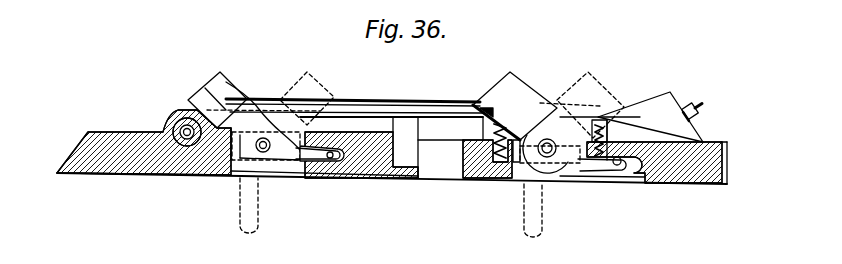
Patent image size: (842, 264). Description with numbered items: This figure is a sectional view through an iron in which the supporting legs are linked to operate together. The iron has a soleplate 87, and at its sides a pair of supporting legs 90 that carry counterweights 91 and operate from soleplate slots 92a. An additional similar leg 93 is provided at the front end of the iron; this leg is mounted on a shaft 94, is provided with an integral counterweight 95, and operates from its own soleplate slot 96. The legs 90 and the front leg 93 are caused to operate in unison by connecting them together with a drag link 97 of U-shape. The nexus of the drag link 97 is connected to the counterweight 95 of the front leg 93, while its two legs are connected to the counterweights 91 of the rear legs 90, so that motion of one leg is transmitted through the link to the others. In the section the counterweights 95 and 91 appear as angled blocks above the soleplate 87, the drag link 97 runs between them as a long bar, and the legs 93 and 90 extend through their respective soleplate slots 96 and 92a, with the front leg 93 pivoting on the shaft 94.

The soleplate 87 is at (127, 170).
The integral counterweight 95 is at (226, 84).
The drag link 97 is at (383, 101).
The shaft 94 is at (267, 150).
The leg 93 is at (320, 165).
The soleplate slot 96 is at (330, 152).
The counterweight 91 is at (497, 86).
The soleplate slot 92a is at (627, 153).
The supporting leg 90 is at (606, 172).